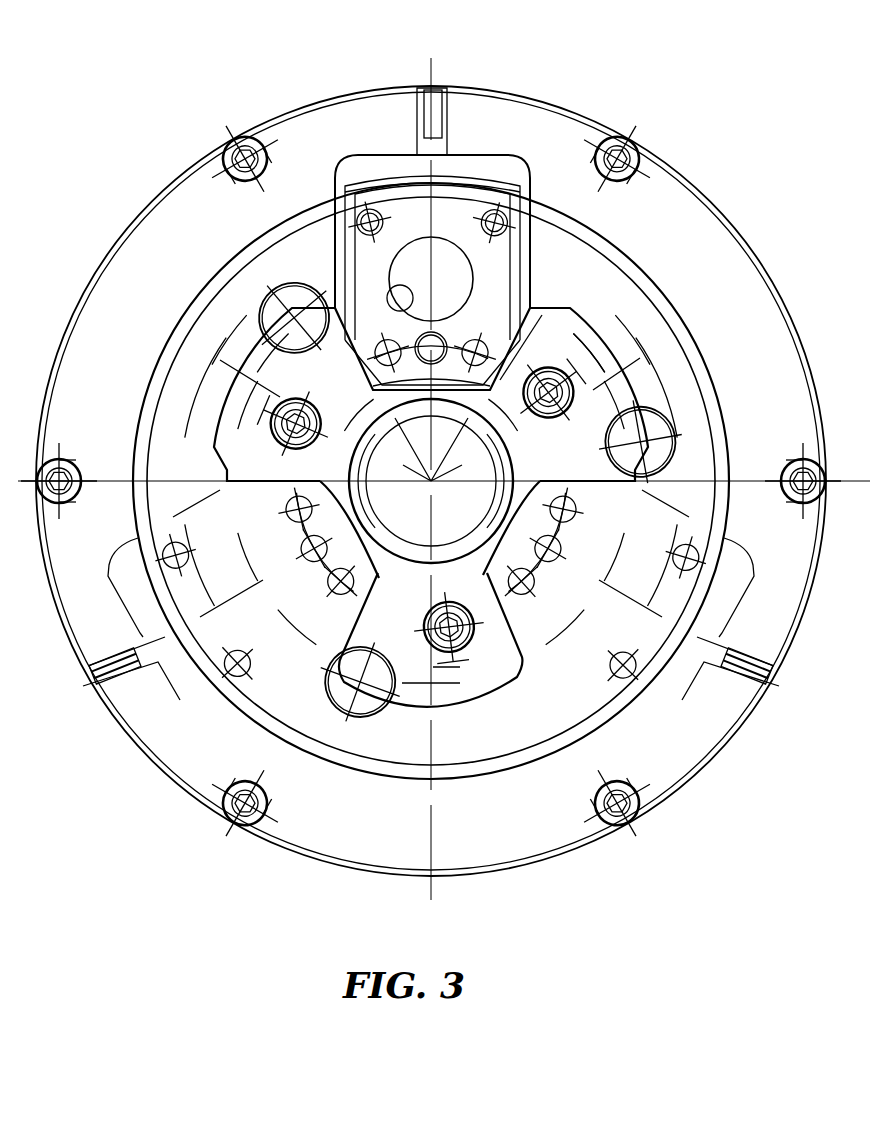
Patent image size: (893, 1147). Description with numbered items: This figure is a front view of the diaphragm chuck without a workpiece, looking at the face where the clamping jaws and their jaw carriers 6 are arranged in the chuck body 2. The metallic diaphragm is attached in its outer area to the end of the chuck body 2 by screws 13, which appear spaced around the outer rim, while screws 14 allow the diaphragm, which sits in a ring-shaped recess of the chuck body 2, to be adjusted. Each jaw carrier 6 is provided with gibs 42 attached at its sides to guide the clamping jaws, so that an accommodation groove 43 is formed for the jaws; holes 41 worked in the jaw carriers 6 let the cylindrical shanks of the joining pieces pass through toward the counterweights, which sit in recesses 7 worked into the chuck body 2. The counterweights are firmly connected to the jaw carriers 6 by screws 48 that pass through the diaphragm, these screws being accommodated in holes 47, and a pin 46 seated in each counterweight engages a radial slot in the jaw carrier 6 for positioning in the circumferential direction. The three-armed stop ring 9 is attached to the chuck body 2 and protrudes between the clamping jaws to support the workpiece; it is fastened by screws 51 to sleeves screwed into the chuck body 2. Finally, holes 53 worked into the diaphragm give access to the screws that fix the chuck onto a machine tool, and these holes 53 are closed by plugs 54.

The chuck body 2 is at (76, 326).
The jaw carriers 6 is at (467, 171).
The recesses 7 is at (735, 545).
The three-armed stop ring 9 is at (487, 702).
The screws 13 is at (632, 822).
The screws 14 is at (438, 118).
The holes 41 is at (333, 290).
The gibs 42 is at (362, 216).
The accommodation groove 43 is at (406, 232).
The pin 46 is at (640, 358).
The holes 47 is at (524, 235).
The screws 48 is at (280, 303).
The screws 51 is at (448, 600).
The holes 53 is at (352, 642).
The plugs 54 is at (358, 650).